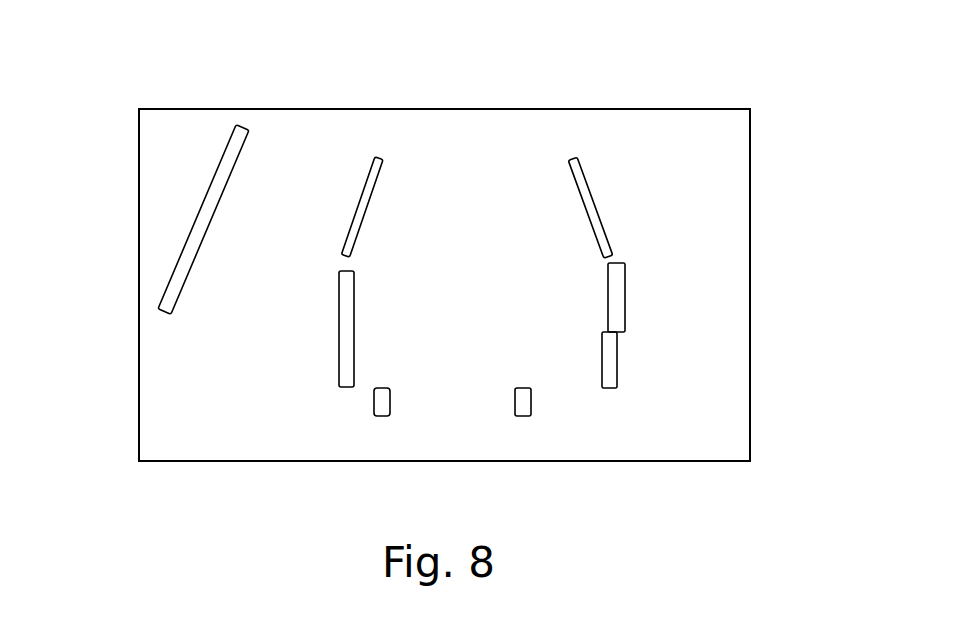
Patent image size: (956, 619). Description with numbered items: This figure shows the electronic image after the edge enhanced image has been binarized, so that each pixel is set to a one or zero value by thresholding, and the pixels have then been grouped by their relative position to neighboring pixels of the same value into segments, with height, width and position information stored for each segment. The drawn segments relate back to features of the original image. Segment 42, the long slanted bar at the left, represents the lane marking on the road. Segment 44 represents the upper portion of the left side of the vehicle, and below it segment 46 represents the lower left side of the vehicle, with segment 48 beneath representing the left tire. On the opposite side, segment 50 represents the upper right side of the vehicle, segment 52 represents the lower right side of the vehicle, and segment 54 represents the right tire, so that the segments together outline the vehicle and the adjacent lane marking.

The segment 42 is at (213, 180).
The segment 44 is at (365, 185).
The segment 50 is at (593, 192).
The segment 46 is at (339, 355).
The segment 52 is at (625, 300).
The segment 48 is at (383, 416).
The segment 54 is at (531, 403).